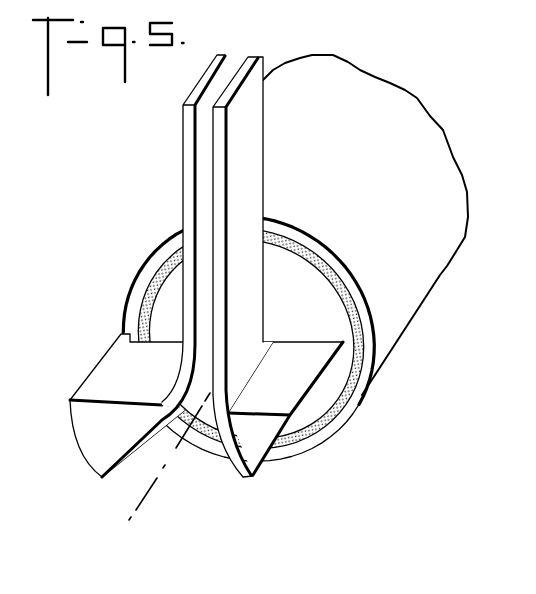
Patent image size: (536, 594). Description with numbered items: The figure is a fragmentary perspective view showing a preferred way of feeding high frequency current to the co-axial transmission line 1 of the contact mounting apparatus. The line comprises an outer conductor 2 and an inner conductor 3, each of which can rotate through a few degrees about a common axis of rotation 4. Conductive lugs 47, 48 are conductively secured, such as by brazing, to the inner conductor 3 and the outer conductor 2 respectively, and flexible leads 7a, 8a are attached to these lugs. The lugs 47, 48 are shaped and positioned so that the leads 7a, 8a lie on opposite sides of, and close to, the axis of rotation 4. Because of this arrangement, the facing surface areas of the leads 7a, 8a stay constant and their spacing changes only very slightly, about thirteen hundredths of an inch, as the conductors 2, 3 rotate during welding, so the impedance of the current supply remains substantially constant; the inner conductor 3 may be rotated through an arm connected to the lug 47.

The co-axial transmission line 1 is at (112, 306).
The outer conductor 2 is at (355, 400).
The inner conductor 3 is at (298, 285).
The axis of rotation 4 is at (140, 493).
The flexible lead 7a is at (252, 125).
The flexible lead 8a is at (188, 127).
The conductive lug 47 is at (268, 452).
The conductive lug 48 is at (100, 384).